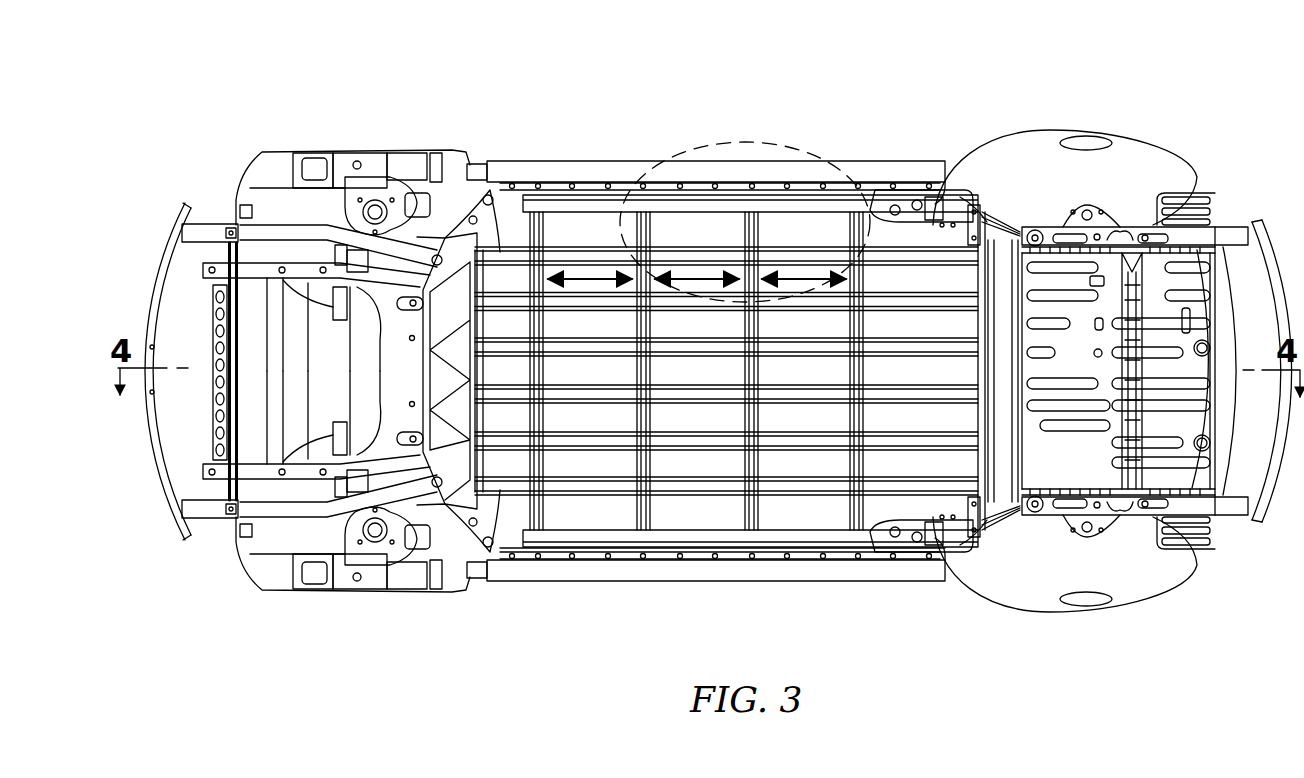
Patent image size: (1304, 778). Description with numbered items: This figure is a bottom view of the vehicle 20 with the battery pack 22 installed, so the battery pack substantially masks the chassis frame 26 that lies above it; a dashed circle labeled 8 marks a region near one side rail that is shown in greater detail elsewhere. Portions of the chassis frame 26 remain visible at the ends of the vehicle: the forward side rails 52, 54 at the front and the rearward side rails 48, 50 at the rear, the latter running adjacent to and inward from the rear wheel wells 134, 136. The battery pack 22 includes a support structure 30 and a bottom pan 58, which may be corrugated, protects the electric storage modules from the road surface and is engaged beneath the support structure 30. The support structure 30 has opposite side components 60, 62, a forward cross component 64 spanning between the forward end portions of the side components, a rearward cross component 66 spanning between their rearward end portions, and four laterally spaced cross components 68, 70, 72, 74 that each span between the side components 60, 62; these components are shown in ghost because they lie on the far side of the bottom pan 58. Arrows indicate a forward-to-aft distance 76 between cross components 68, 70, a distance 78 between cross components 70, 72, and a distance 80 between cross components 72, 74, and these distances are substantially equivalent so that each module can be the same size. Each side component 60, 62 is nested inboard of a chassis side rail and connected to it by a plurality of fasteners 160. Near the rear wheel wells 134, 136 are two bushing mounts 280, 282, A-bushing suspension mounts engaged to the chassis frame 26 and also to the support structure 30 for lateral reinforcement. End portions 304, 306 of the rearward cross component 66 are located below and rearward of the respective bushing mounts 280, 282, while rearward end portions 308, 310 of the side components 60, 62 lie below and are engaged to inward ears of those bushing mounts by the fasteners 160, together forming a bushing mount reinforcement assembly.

The vehicle 20 is at (200, 100).
The detail region 8 is at (755, 142).
The battery pack 22 is at (826, 182).
The chassis frame 26 is at (803, 568).
The support structure 30 is at (700, 183).
The rearward side rail 48 is at (1098, 215).
The rearward side rail 50 is at (1098, 520).
The forward side rail 52 is at (308, 225).
The forward side rail 54 is at (298, 500).
The bottom pan 58 is at (796, 233).
The side component 60 is at (548, 161).
The side component 62 is at (590, 582).
The forward cross component 64 is at (477, 370).
The rearward cross component 66 is at (993, 450).
The cross component 68 is at (547, 468).
The cross component 70 is at (652, 468).
The cross component 72 is at (760, 468).
The cross component 74 is at (864, 468).
The distance 76 is at (590, 282).
The distance 78 is at (690, 282).
The distance 80 is at (800, 282).
The rear wheel well 134 is at (1061, 192).
The rear wheel well 136 is at (1061, 576).
The fasteners 160 is at (637, 582).
The bushing mount 280 is at (937, 207).
The bushing mount 282 is at (932, 545).
The end portion 304 is at (968, 240).
The end portion 306 is at (983, 513).
The rearward end portion 308 is at (958, 240).
The rearward end portion 310 is at (955, 520).